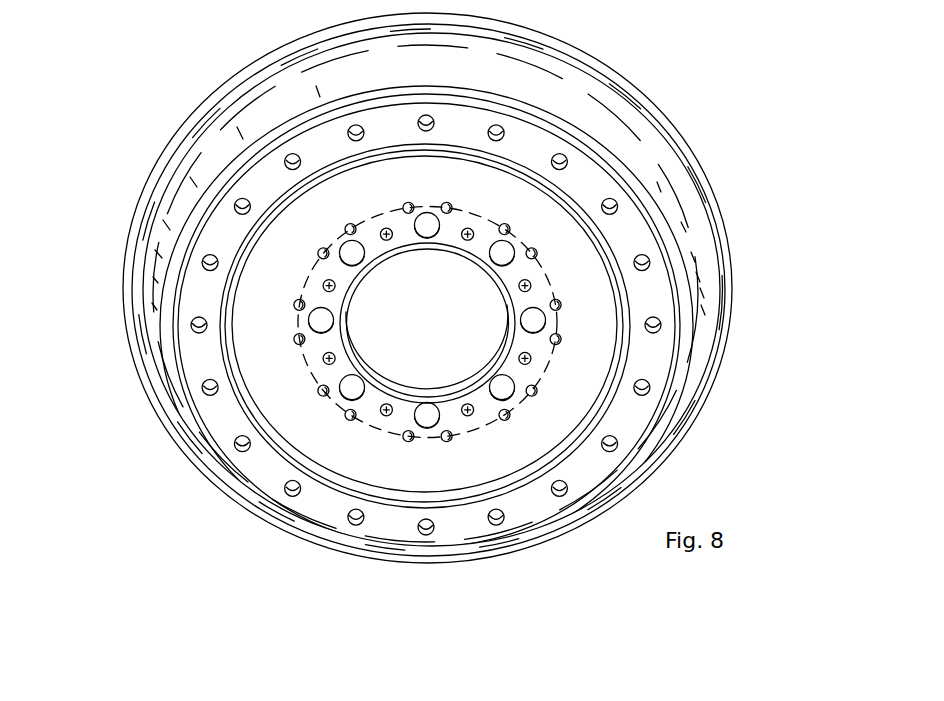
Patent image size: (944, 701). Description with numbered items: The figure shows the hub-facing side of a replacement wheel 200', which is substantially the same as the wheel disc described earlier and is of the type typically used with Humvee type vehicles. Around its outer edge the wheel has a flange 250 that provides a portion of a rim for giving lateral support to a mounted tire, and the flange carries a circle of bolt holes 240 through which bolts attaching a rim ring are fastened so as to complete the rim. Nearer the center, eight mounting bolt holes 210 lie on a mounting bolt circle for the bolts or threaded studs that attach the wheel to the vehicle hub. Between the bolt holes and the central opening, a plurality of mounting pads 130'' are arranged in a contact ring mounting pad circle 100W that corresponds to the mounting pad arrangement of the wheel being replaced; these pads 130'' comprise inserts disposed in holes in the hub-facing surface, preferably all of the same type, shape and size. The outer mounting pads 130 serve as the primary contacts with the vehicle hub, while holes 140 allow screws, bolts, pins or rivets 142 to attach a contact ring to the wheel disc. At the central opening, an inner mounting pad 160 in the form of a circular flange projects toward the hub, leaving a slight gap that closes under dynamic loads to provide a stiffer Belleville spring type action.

The replacement wheel 200' is at (396, 322).
The flange 250 is at (704, 168).
The bolt holes 240 is at (211, 255).
The mounting bolt holes 210 is at (349, 391).
The contact ring mounting pad circle 100W is at (298, 353).
The mounting pads 130'' is at (389, 259).
The mounting pads 130 is at (430, 321).
The holes 140 is at (571, 357).
The screws, bolts, pins or rivets 142 is at (531, 360).
The inner mounting pad 160 is at (450, 396).